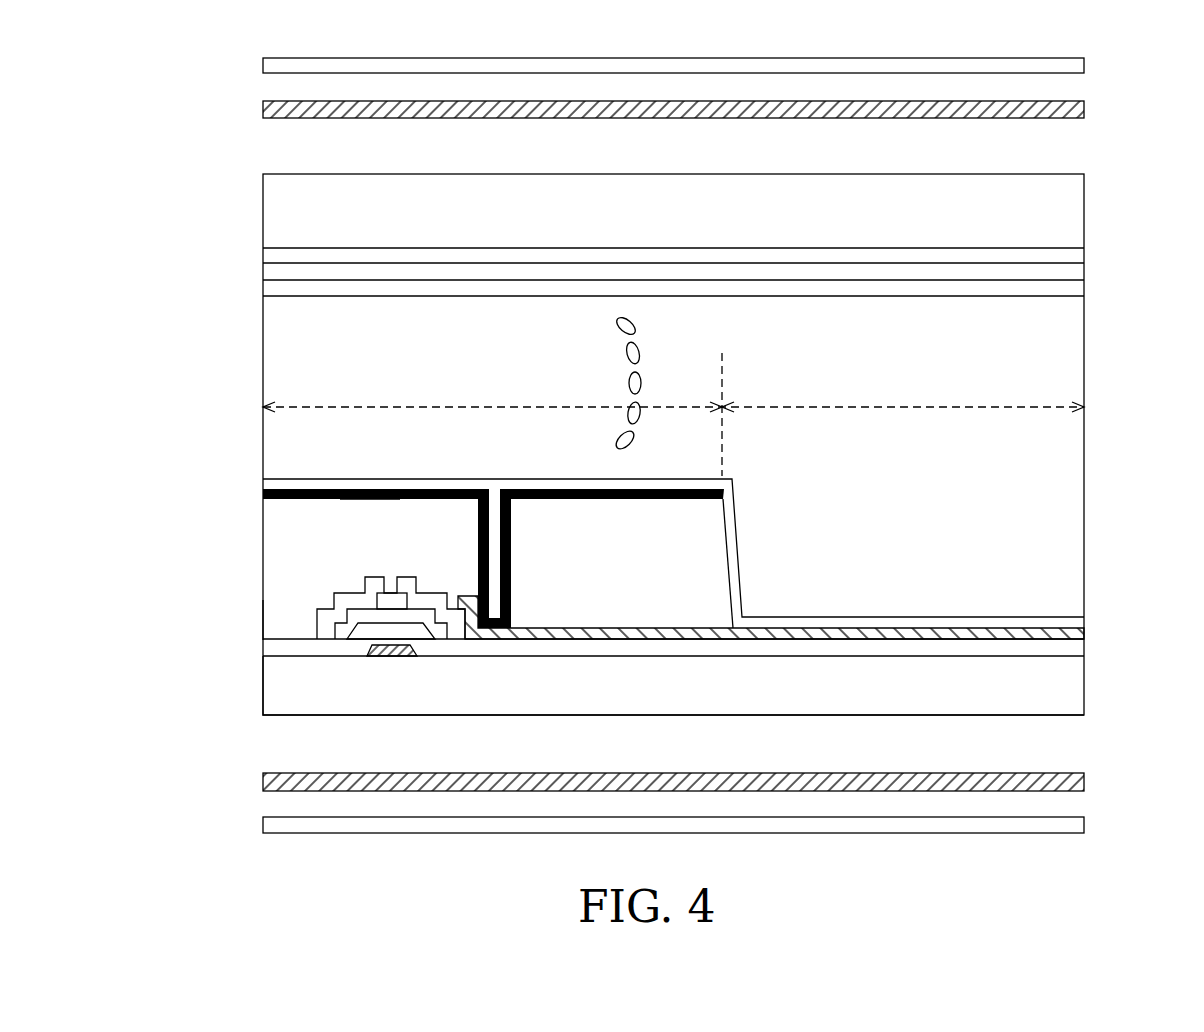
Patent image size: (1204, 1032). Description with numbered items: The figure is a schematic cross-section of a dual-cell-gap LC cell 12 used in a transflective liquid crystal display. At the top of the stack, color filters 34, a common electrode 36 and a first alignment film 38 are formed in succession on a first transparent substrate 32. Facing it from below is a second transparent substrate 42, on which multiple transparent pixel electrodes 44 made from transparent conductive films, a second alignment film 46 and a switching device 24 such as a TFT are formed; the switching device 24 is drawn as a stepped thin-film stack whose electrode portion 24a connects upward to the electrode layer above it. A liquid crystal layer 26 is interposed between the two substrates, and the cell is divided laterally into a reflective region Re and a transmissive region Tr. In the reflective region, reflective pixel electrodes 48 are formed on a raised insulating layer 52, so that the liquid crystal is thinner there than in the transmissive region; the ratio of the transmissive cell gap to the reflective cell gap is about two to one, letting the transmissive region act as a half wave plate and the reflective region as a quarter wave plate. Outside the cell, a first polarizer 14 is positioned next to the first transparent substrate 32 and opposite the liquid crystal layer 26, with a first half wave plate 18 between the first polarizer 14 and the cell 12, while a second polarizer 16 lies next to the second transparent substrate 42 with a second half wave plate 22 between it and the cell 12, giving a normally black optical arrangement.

The dual-cell-gap LC cell 12 is at (1075, 172).
The first polarizer 14 is at (265, 68).
The second polarizer 16 is at (272, 824).
The first half wave plate 18 is at (265, 112).
The second half wave plate 22 is at (270, 782).
The switching device 24 is at (417, 577).
The drain electrode 24a is at (372, 499).
The liquid crystal layer 26 is at (272, 383).
The first transparent substrate 32 is at (272, 193).
The color filters 34 is at (272, 250).
The common electrode 36 is at (272, 270).
The first alignment film 38 is at (272, 287).
The second transparent substrate 42 is at (272, 686).
The transparent pixel electrodes 44 is at (680, 630).
The second alignment film 46 is at (272, 482).
The reflective pixel electrodes 48 is at (268, 494).
The raised insulating layer 52 is at (288, 573).